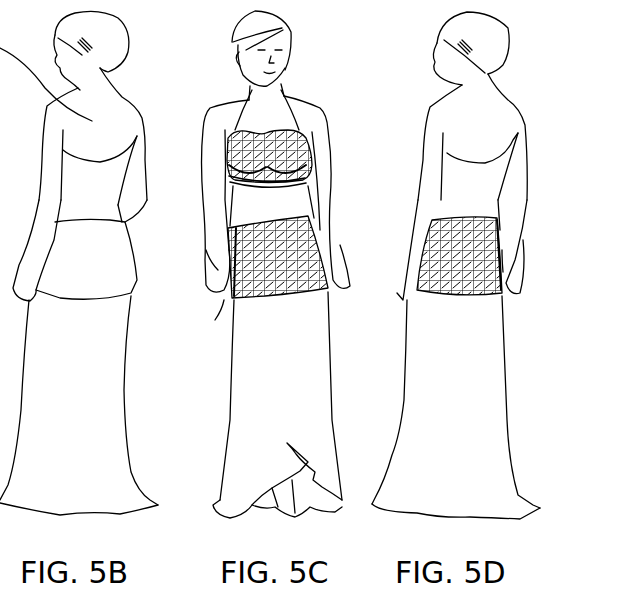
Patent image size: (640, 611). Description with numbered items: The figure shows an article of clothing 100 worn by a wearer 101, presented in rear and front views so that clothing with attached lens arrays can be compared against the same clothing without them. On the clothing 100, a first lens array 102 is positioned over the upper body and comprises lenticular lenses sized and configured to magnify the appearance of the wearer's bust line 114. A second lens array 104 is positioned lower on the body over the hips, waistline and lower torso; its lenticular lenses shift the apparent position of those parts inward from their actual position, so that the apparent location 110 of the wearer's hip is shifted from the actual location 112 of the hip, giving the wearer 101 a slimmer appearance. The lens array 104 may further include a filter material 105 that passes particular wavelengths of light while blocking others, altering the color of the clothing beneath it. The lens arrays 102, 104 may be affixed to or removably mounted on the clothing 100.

In FIG. 5C, the article of clothing 100 is at (335, 88).
In FIG. 5C, the wearer 101 is at (336, 261).
In FIG. 5C, the first lens array 102 is at (305, 150).
In FIG. 5C, the second lens array 104 is at (322, 236).
In FIG. 5D, the second lens array 104 is at (508, 290).
In FIG. 5C, the filter material 105 is at (303, 300).
In FIG. 5C, the apparent location of the wearer's hip 110 is at (212, 258).
In FIG. 5D, the apparent location of the wearer's hip 110 is at (508, 270).
In FIG. 5C, the actual location of the wearer's hip 112 is at (224, 300).
In FIG. 5C, the wearer's bust line 114 is at (318, 184).